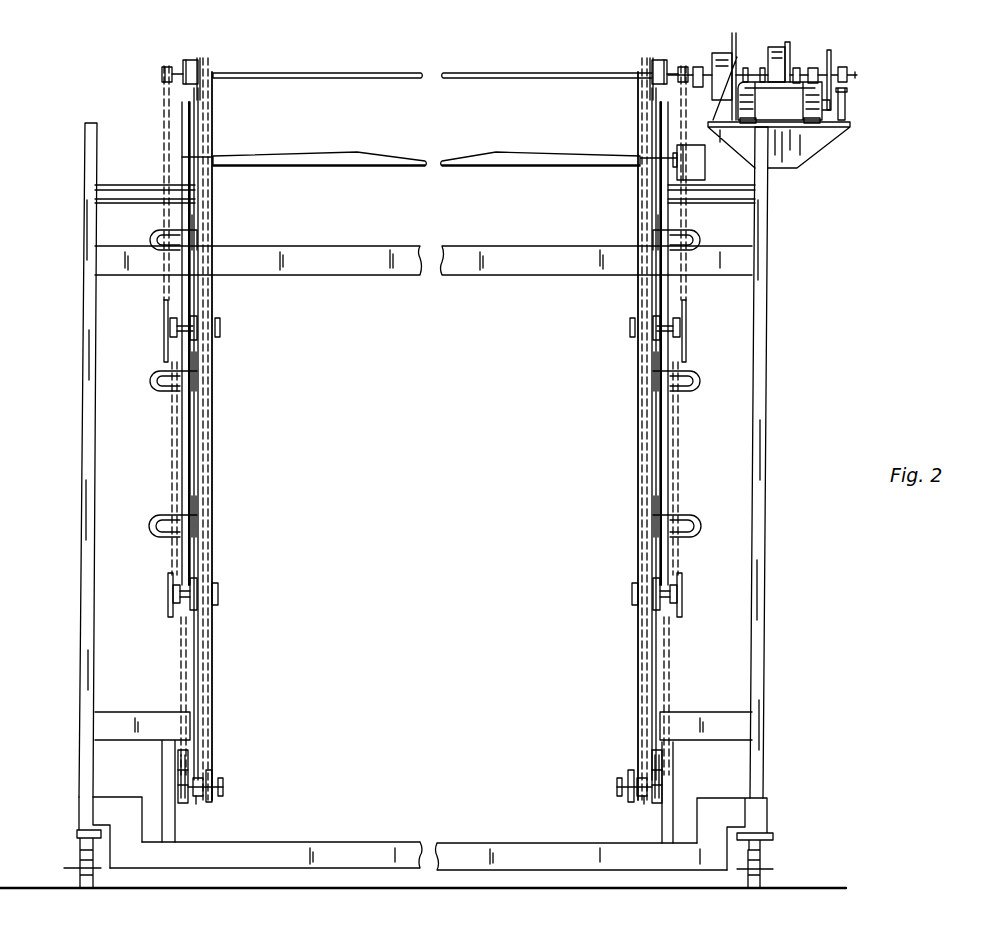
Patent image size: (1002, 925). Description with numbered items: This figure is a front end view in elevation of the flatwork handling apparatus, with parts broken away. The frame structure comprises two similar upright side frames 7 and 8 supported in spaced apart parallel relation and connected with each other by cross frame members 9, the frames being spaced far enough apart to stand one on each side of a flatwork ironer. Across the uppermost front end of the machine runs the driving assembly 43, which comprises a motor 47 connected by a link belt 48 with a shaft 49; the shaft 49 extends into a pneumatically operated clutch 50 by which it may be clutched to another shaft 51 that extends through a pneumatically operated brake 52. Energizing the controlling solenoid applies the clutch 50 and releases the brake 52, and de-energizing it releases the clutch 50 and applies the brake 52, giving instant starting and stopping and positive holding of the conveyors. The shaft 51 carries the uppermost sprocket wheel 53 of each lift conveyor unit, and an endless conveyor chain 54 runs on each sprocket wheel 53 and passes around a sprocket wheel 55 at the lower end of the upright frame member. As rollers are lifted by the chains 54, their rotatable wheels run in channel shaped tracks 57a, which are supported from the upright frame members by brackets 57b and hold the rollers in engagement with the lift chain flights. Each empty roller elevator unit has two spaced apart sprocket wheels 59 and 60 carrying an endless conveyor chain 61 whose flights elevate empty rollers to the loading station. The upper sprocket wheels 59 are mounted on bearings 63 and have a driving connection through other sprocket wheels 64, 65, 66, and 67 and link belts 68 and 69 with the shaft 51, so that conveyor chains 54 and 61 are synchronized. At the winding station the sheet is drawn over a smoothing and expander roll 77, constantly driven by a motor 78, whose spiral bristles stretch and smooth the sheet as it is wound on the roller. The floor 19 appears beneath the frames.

The upright side frame 7 is at (766, 420).
The upright side frame 8 is at (80, 483).
The cross frame members 9 is at (413, 274).
The floor 19 is at (805, 887).
The driving assembly 43 is at (866, 78).
The motor 47 is at (806, 106).
The link belt 48 is at (832, 52).
The shaft 49 is at (805, 66).
The clutch 50 is at (775, 47).
The shaft 51 is at (448, 58).
The brake 52 is at (725, 50).
The sprocket wheel 53 is at (207, 57).
The conveyor chain 54 is at (206, 438).
The sprocket wheel 55 is at (198, 803).
The channel shaped tracks 57a is at (182, 438).
The brackets 57b is at (156, 377).
The sprocket wheel 59 is at (186, 578).
The sprocket wheel 60 is at (178, 766).
The conveyor chain 61 is at (182, 662).
The bearings 63 is at (678, 590).
The sprocket wheel 64 is at (168, 612).
The sprocket wheel 65 is at (170, 320).
The sprocket wheel 66 is at (163, 345).
The sprocket wheel 67 is at (166, 66).
The link belt 68 is at (170, 476).
The link belt 69 is at (163, 100).
The smoothing and expander roll 77 is at (330, 170).
The motor 78 is at (705, 168).